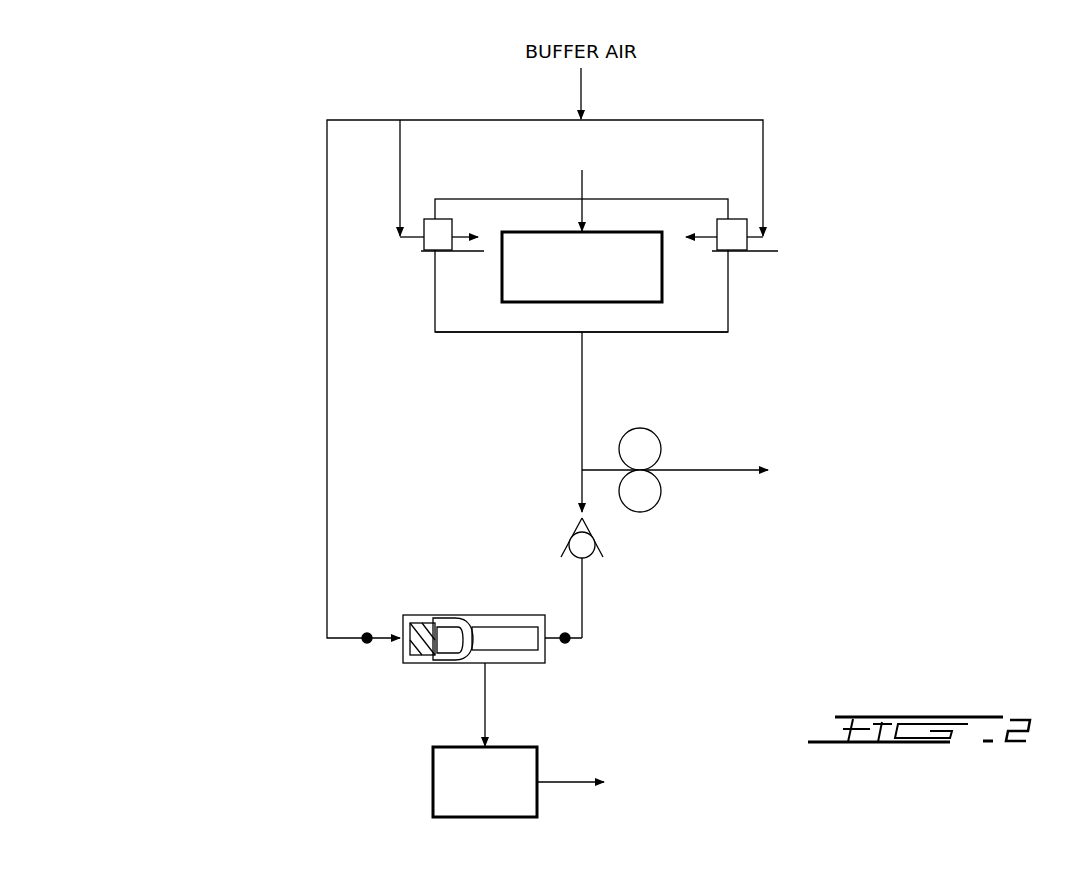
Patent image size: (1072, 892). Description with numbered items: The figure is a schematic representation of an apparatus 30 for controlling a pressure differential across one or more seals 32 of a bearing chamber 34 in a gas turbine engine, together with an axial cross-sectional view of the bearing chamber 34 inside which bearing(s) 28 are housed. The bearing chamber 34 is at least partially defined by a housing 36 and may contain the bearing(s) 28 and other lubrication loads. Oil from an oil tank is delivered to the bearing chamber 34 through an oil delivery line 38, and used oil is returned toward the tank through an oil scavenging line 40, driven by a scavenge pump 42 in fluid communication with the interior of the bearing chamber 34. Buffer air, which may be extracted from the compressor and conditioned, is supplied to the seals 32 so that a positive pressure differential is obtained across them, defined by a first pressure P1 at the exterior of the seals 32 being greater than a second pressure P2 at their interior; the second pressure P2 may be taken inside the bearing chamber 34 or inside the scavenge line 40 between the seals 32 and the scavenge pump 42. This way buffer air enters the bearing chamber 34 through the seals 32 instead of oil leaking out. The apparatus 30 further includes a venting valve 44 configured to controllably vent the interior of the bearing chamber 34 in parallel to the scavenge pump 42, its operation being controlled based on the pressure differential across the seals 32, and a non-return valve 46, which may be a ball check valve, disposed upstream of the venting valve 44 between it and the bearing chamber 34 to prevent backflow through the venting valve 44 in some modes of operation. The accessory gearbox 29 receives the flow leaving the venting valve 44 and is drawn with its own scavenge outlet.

The bearing(s) 28 is at (570, 292).
The accessory gearbox (AGB) 29 is at (473, 807).
The apparatus 30 is at (296, 485).
The seals 32 is at (447, 218).
The bearing chamber 34 is at (462, 303).
The housing 36 is at (502, 333).
The oil delivery line 38 is at (580, 184).
The oil scavenging line 40 is at (582, 368).
The scavenge pump 42 is at (661, 491).
The venting valve 44 is at (485, 616).
The non-return valve 46 is at (596, 540).
The first pressure P1 is at (367, 645).
The second pressure P2 is at (565, 645).